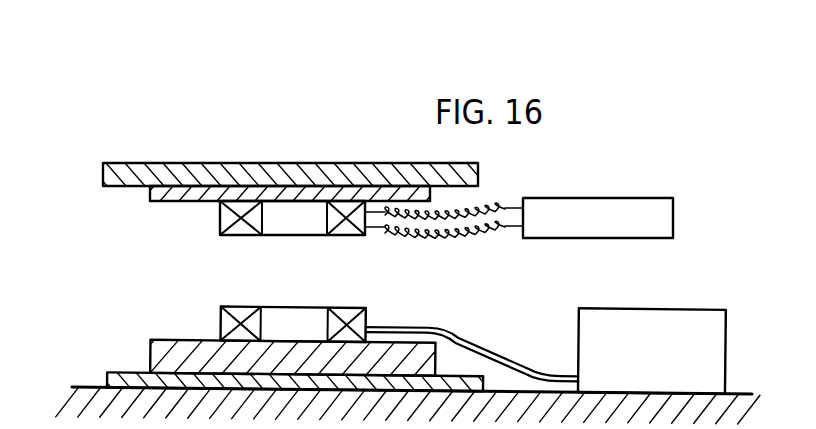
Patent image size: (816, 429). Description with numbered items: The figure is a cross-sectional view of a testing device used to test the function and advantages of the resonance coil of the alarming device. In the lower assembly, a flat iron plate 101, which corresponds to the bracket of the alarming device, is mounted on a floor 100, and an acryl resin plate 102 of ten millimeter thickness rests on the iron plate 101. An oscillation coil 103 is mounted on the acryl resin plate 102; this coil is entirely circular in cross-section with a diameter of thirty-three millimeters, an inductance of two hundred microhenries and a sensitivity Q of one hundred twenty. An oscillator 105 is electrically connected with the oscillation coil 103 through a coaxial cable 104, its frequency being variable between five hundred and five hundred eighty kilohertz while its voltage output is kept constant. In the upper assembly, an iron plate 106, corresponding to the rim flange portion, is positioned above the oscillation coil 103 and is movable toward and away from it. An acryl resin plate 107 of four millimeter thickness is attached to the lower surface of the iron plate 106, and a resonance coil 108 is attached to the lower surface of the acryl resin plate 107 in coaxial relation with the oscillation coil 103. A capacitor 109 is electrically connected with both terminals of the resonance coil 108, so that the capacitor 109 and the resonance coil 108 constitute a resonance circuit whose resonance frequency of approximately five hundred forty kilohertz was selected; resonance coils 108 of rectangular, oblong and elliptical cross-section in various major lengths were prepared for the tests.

The floor 100 is at (88, 393).
The flat iron plate 101 is at (137, 372).
The acryl resin plate 102 is at (176, 340).
The oscillation coil 103 is at (249, 309).
The coaxial cable 104 is at (485, 340).
The oscillator 105 is at (647, 305).
The iron plate 106 is at (323, 163).
The acryl resin plate 107 is at (152, 192).
The resonance coil 108 is at (228, 217).
The capacitor 109 is at (590, 200).